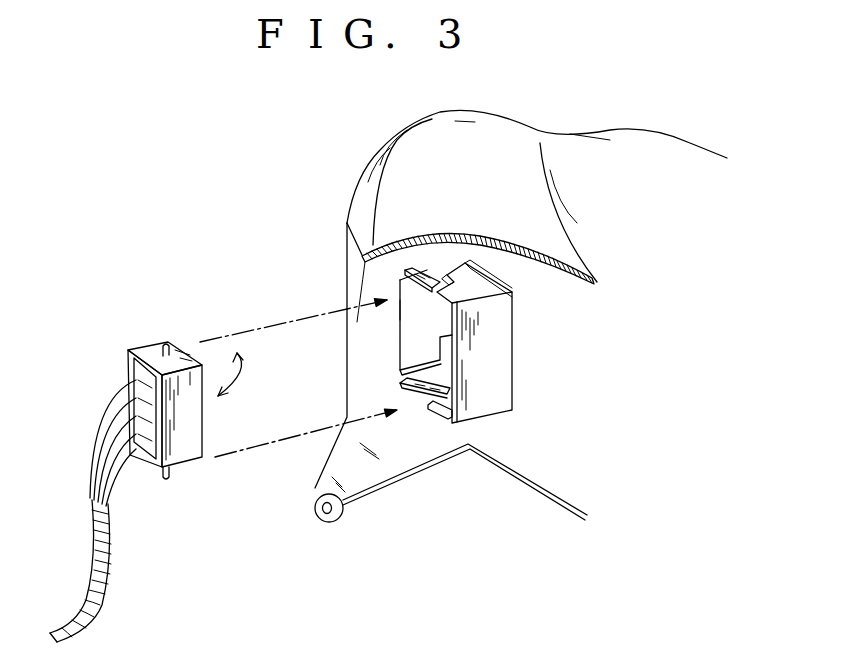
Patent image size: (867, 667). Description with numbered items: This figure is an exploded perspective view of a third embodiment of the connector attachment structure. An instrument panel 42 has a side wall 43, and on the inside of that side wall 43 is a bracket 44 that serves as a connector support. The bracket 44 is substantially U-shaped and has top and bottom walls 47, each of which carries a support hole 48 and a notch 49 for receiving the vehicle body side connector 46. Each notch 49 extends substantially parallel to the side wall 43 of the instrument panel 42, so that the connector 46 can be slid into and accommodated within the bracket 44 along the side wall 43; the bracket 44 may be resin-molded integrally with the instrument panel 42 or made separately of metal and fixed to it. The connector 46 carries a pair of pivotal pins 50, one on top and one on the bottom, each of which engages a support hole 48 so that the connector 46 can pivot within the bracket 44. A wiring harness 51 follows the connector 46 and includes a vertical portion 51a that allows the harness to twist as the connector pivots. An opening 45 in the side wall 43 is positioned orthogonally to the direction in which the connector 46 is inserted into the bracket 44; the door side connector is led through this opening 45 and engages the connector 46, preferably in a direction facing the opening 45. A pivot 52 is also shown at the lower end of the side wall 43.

The instrument panel 42 is at (664, 136).
The side wall 43 is at (347, 340).
The bracket 44 is at (514, 411).
The opening 45 is at (403, 340).
The vehicle body side connector 46 is at (187, 452).
The top and bottom walls 47 is at (492, 285).
The support hole 48 is at (458, 277).
The notch 49 is at (441, 277).
The pivotal pins 50 is at (173, 343).
The wiring harness 51 is at (97, 510).
The vertical portion 51a is at (108, 568).
The hinge pin 52 is at (335, 530).